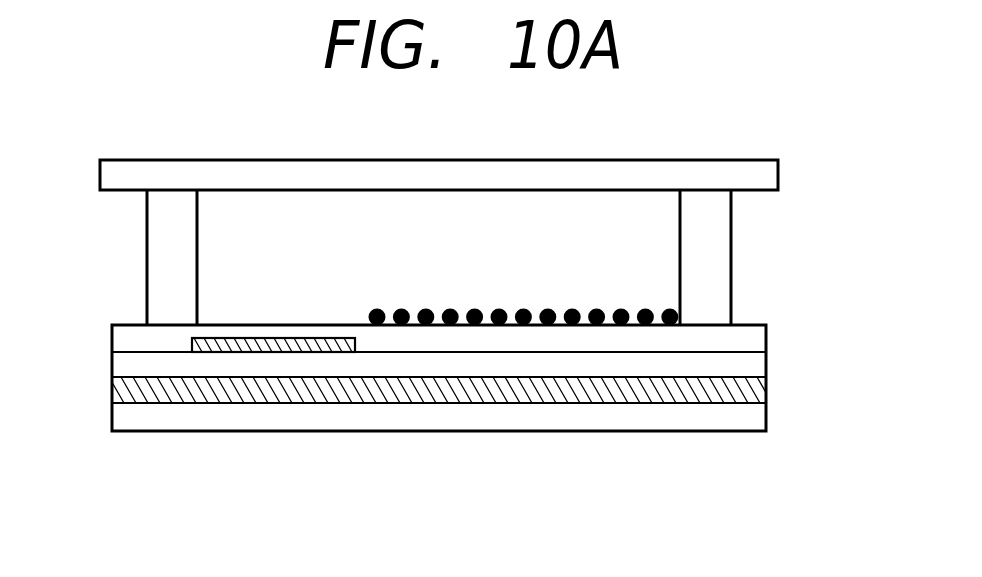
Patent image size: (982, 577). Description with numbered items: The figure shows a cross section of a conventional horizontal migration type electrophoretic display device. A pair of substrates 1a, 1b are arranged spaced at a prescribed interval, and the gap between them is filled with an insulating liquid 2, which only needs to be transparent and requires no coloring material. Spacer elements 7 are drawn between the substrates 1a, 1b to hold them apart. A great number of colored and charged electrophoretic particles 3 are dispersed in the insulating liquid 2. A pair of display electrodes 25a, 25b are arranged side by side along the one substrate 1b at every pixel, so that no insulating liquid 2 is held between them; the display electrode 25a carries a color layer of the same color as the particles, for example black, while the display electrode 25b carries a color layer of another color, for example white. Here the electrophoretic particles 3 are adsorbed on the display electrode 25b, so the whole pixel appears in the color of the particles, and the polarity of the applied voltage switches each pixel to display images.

The substrate 1a is at (762, 177).
The substrate 1b is at (755, 418).
The insulating liquid 2 is at (470, 254).
The colored and charged electrophoretic particles 3 is at (551, 307).
The seal / spacer wall 7 is at (168, 250).
The display electrode 25a is at (263, 345).
The display electrode 25b is at (358, 390).